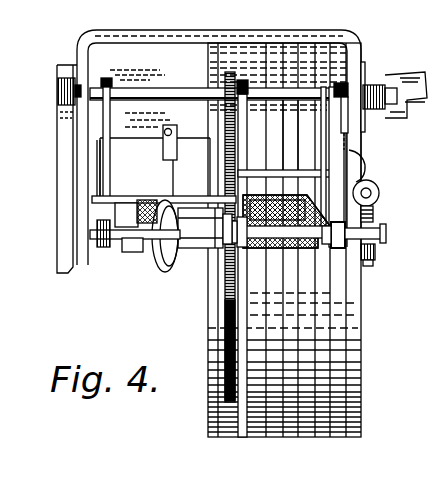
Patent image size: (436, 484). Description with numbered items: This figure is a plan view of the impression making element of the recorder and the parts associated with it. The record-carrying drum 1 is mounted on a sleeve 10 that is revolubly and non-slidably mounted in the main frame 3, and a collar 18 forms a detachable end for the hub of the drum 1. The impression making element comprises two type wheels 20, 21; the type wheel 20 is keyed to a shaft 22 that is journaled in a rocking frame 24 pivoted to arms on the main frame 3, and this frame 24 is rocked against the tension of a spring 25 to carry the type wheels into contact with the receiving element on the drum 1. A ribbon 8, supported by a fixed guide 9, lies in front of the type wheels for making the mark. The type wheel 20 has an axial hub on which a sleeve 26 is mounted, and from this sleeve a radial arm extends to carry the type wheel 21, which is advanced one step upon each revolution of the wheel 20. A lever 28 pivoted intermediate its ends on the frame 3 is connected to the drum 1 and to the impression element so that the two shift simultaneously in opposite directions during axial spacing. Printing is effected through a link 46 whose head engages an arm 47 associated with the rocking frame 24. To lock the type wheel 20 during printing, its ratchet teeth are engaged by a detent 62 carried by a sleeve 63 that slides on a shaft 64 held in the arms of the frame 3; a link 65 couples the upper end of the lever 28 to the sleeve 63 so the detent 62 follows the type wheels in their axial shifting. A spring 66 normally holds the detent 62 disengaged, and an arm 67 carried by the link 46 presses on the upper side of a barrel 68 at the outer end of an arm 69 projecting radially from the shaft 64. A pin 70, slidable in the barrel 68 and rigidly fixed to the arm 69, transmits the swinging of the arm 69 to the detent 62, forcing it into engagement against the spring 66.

The drum 1 is at (362, 363).
The frame 3 is at (55, 271).
The ribbon 8 is at (293, 248).
The fixed guide 9 is at (260, 250).
The sleeve 10 is at (383, 253).
The collar 18 is at (187, 262).
The type wheel 20 is at (226, 378).
The type wheel 21 is at (226, 310).
The shaft 22 is at (355, 247).
The frame 24 is at (82, 170).
The spring 25 is at (365, 80).
The sleeve 26 is at (197, 230).
The lever 28 is at (146, 250).
The link 46 is at (369, 266).
The arm 47 is at (379, 196).
The detent 62 is at (240, 160).
The sleeve 63 is at (143, 90).
The shaft 64 is at (277, 99).
The link 65 is at (108, 150).
The spring 66 is at (341, 82).
The arm 67 is at (366, 166).
The barrel 68 is at (326, 166).
The arm 69 is at (325, 128).
The pin 70 is at (294, 135).